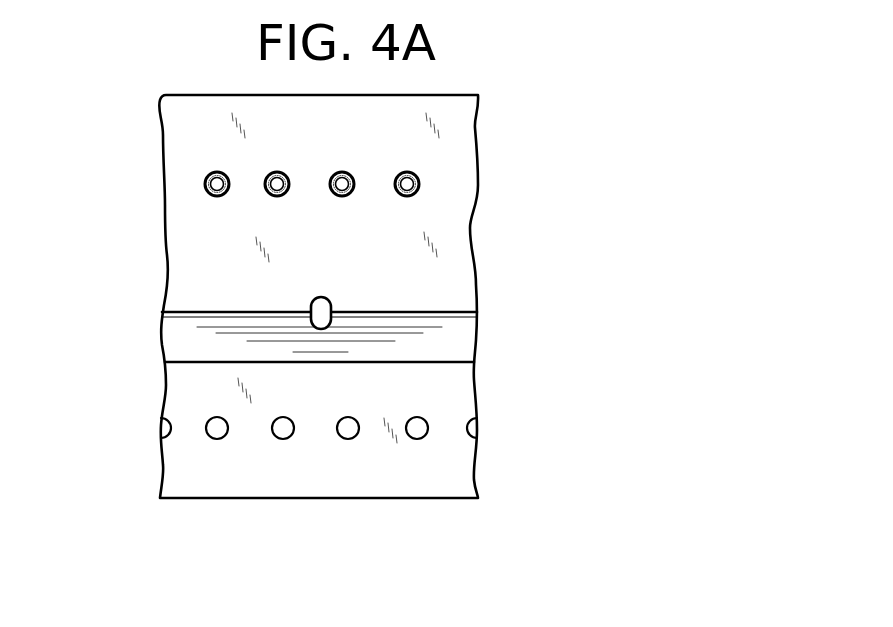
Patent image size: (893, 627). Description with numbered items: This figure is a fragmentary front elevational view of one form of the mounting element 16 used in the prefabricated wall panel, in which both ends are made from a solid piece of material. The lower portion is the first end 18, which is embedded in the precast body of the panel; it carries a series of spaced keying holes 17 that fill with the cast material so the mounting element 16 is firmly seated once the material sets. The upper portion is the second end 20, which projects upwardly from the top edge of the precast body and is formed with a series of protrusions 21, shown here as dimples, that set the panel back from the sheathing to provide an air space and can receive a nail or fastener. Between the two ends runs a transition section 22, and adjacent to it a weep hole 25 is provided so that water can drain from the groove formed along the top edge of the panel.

The mounting element 16 is at (124, 130).
The keying holes 17 is at (218, 432).
The first end 18 is at (187, 390).
The second end 20 is at (452, 121).
The protrusions 21 is at (420, 182).
The transition section 22 is at (452, 340).
The weep holes 25 is at (331, 303).